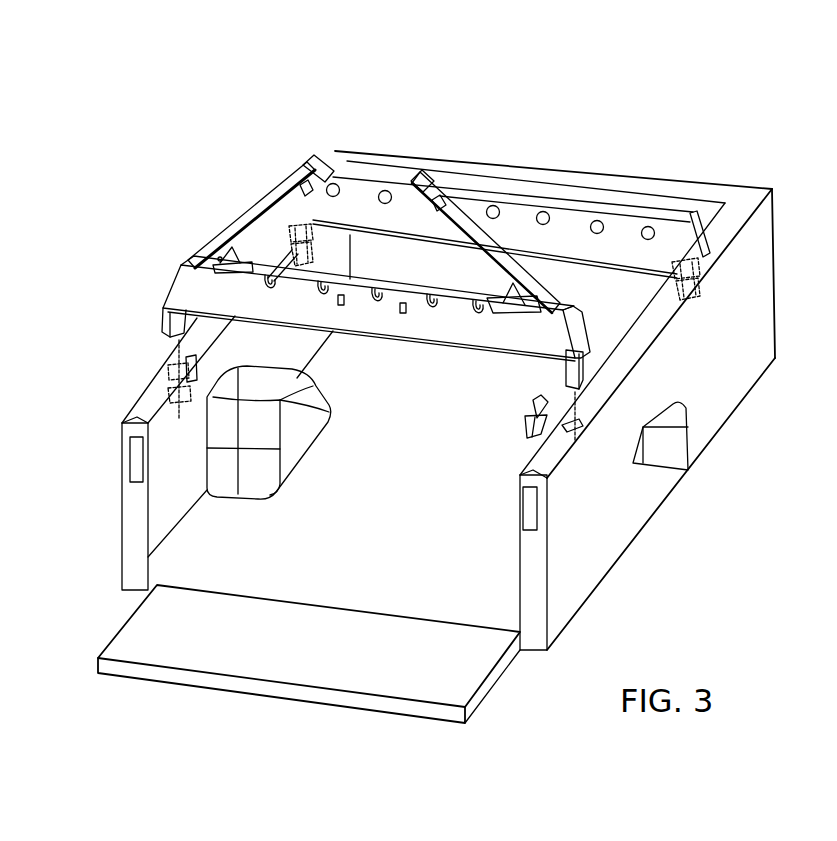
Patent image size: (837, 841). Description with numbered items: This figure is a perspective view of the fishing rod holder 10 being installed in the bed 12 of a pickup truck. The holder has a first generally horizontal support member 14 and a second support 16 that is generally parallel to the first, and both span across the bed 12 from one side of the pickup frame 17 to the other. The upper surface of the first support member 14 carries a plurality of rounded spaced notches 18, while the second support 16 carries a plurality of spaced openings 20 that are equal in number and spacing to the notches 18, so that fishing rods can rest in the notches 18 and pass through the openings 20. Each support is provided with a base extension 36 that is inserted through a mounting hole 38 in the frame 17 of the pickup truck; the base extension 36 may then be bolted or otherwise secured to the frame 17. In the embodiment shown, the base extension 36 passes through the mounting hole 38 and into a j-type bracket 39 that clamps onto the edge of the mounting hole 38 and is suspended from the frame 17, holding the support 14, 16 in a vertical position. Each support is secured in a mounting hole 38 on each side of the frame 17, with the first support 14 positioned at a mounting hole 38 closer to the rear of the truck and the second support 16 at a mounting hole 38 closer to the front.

The fishing rod holder 10 is at (276, 151).
The bed of a pickup truck 12 is at (407, 504).
The first generally horizontal support member 14 is at (187, 296).
The second support 16 is at (618, 225).
The frame of the pickup truck 17 is at (592, 536).
The rounded spaced notches 18 is at (425, 306).
The spaced openings 20 is at (500, 206).
The base extension 36 is at (588, 370).
The mounting hole 38 is at (584, 423).
The j-type bracket 39 is at (527, 427).